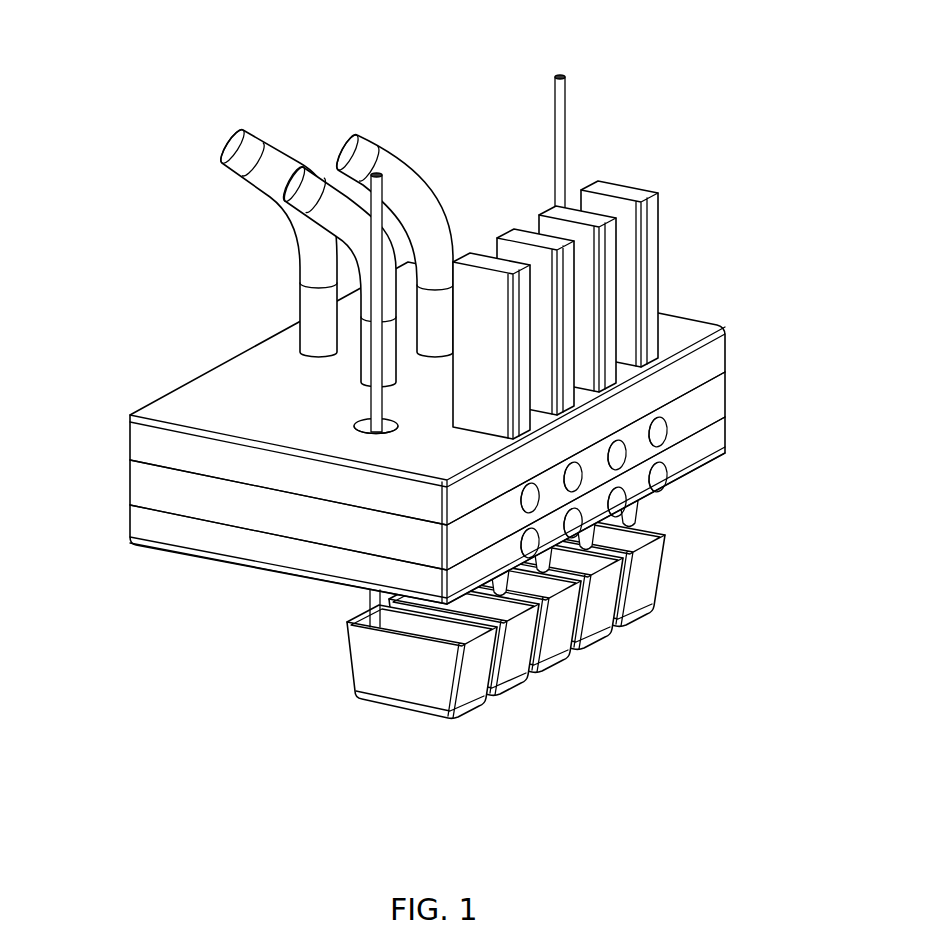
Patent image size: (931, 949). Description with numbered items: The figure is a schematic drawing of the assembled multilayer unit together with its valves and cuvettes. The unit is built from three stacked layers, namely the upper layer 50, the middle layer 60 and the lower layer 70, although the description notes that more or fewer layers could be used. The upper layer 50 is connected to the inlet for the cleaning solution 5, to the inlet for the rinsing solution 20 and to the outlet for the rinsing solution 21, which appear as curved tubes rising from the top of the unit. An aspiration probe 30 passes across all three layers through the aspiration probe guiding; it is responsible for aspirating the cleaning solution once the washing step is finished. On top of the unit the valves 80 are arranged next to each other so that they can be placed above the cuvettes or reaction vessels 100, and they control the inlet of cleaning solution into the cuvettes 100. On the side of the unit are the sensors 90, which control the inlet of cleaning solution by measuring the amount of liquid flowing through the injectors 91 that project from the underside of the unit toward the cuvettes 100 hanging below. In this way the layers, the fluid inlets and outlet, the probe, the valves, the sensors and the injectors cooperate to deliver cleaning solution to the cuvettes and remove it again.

The inlet for the cleaning solution 5 is at (240, 148).
The inlet for the rinsing solution 20 is at (300, 178).
The outlet for the rinsing solution 21 is at (352, 150).
The aspiration probe 30 is at (385, 215).
The upper layer 50 is at (152, 446).
The middle layer 60 is at (145, 487).
The lower layer 70 is at (142, 527).
The valves 80 is at (520, 340).
The sensors 90 is at (531, 546).
The injectors 91 is at (512, 583).
The cuvettes or reaction vessels 100 is at (482, 678).